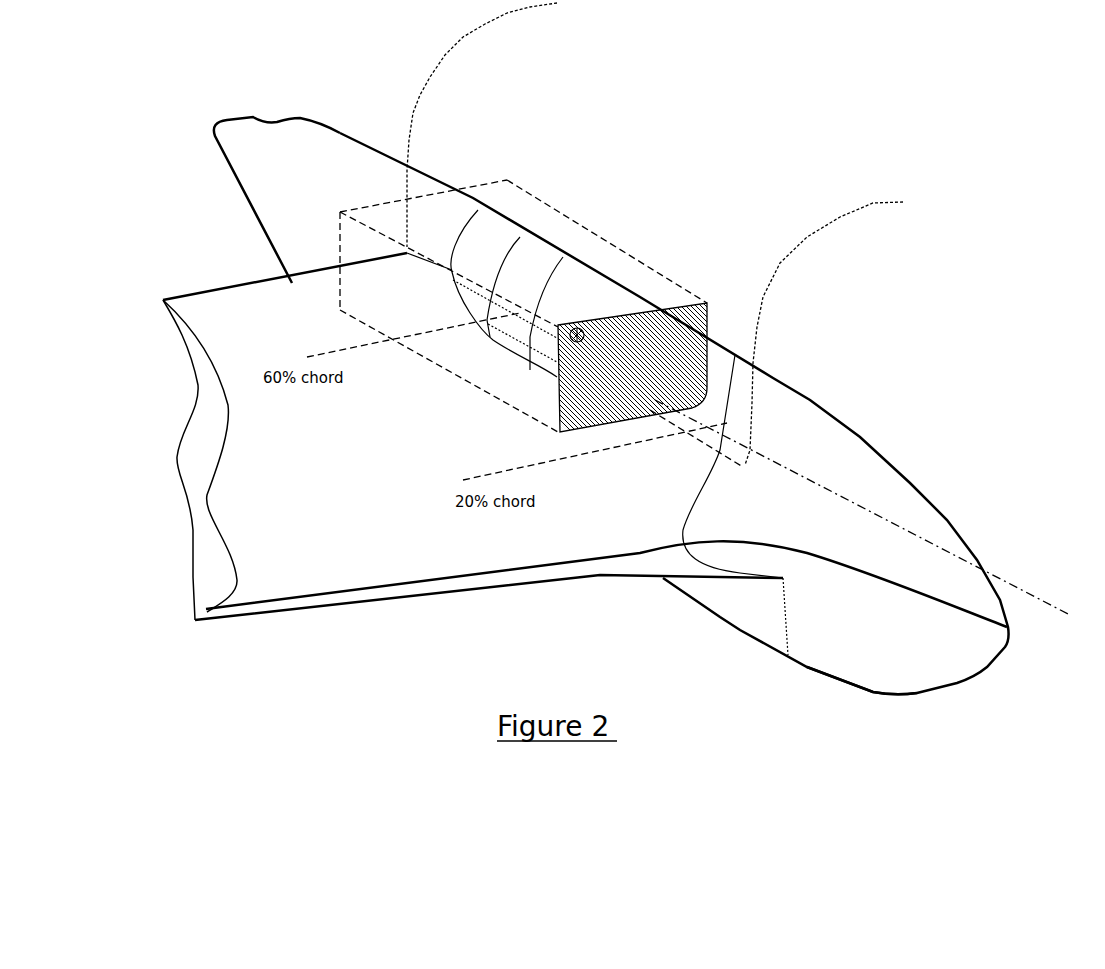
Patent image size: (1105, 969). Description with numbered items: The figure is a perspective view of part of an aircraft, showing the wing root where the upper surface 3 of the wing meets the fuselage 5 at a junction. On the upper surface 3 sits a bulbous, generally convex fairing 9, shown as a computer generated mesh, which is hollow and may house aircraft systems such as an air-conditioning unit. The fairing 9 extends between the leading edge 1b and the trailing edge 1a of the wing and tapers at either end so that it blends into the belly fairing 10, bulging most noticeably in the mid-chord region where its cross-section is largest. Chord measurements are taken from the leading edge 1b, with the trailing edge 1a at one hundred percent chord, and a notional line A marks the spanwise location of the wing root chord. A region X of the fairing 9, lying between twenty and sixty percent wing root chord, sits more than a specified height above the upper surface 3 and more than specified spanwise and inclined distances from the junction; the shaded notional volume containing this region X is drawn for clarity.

The trailing edge 1a is at (293, 280).
The leading edge 1b is at (473, 572).
The upper surface 3 is at (350, 470).
The fuselage 5 is at (839, 246).
The fairing 9 is at (743, 465).
The belly fairing 10 is at (857, 640).
The region X is at (582, 326).
The notional line A is at (873, 515).